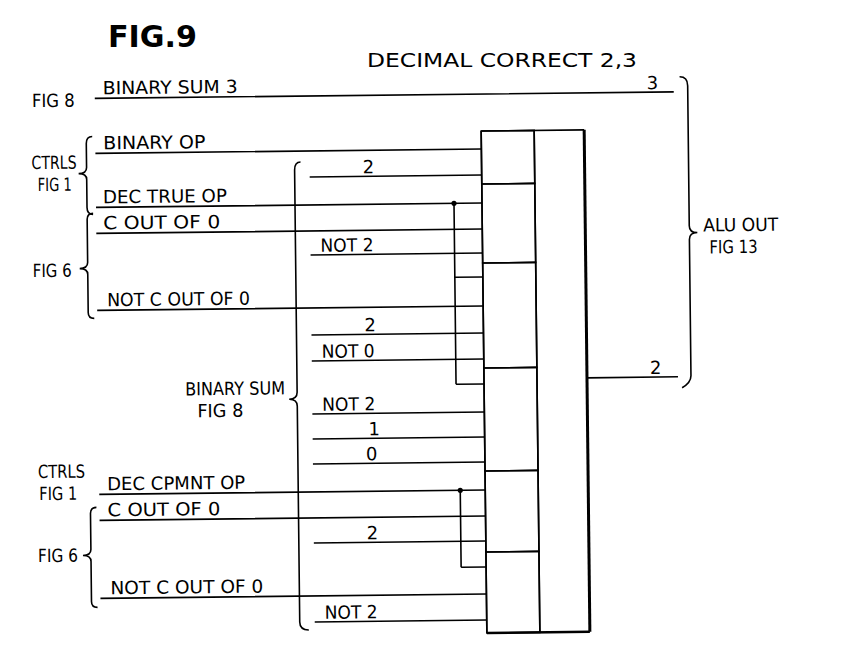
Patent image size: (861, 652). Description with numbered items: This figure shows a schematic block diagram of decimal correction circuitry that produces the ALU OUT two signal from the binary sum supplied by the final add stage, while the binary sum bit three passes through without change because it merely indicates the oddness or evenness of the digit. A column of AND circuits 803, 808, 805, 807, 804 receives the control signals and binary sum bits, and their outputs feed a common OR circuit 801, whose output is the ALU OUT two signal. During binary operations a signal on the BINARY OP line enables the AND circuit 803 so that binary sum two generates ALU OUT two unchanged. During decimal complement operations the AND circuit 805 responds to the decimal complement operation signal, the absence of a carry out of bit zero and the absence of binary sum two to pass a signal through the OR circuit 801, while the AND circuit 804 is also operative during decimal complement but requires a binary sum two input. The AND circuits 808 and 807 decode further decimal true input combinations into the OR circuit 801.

The OR circuit 801 is at (587, 268).
The AND circuit 803 is at (483, 137).
The AND circuit (dec true op, carry out of 0) 808 is at (484, 191).
The AND circuit 805 is at (484, 292).
The AND circuit (dec true op, binary sum not 2, 1, 0) 807 is at (484, 396).
The AND circuit 804 is at (484, 481).